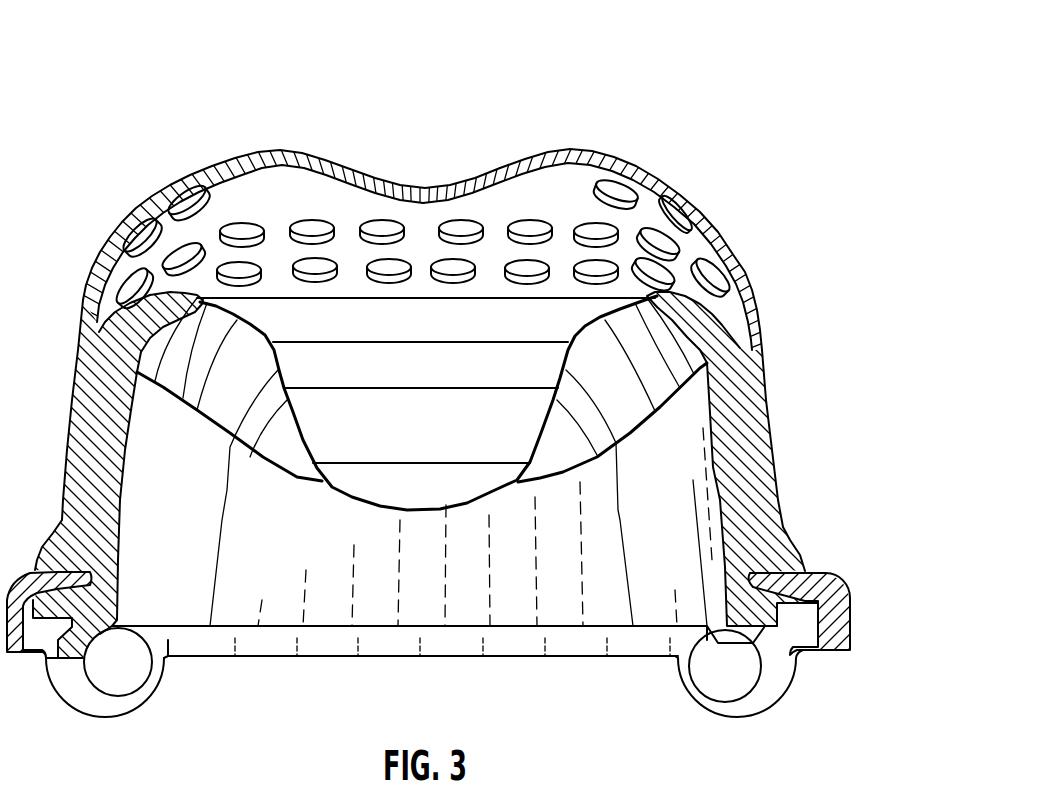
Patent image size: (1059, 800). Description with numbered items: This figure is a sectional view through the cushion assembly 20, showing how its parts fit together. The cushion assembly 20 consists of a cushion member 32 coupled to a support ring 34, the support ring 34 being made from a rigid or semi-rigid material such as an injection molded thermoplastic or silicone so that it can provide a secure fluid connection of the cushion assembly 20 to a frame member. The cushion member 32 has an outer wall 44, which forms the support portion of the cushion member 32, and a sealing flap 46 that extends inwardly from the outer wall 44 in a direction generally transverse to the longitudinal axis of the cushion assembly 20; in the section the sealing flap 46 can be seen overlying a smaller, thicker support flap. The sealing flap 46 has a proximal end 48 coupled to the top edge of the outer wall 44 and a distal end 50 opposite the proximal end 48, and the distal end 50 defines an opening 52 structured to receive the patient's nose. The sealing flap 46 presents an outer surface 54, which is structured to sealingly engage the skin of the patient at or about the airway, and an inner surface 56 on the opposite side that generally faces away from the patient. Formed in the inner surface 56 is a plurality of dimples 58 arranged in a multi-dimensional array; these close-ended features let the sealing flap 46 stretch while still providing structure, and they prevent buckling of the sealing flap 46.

The cushion assembly 20 is at (716, 52).
The cushion member 32 is at (757, 308).
The support ring 34 is at (852, 628).
The outer wall 44 is at (757, 453).
The sealing flap 46 is at (585, 155).
The proximal end 48 is at (83, 315).
The distal end 50 is at (273, 160).
The opening 52 is at (425, 178).
The outer surface 54 is at (703, 210).
The inner surface 56 is at (553, 185).
The dimples 58 is at (382, 222).